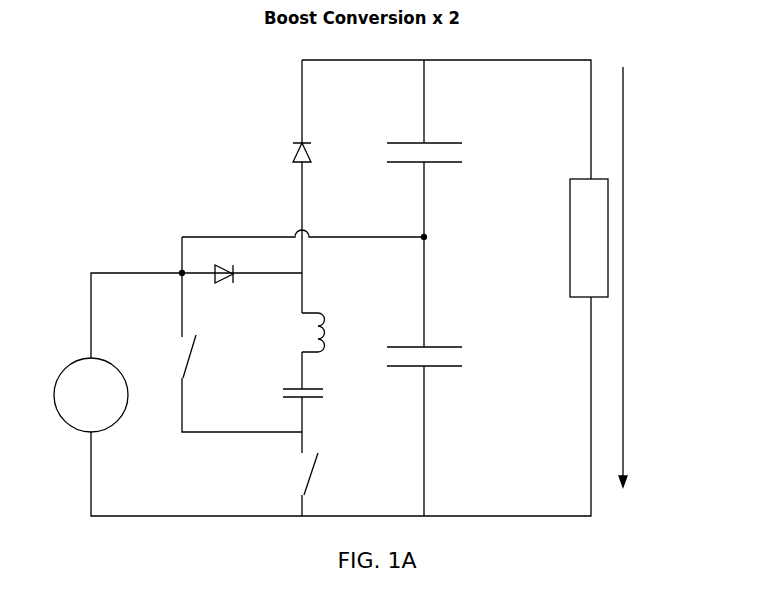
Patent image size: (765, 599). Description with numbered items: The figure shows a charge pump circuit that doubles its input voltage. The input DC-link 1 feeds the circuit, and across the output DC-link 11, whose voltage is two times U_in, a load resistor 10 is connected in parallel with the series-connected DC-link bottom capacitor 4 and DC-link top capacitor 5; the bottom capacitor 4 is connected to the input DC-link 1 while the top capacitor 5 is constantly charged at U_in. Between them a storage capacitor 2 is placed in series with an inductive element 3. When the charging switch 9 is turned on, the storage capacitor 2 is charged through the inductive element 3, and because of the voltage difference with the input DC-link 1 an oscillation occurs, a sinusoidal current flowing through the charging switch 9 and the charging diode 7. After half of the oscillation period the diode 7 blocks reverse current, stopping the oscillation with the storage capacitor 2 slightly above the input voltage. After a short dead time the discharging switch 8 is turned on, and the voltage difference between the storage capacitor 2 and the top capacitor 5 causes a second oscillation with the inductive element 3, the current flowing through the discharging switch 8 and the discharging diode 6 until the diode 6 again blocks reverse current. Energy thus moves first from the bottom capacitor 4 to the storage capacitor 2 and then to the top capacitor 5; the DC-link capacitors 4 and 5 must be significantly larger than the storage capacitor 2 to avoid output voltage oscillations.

The input DC-link 1 is at (79, 395).
The storage capacitor 2 is at (296, 396).
The inductive element 3 is at (307, 332).
The DC-link bottom capacitor 4 is at (437, 353).
The DC-link top capacitor 5 is at (434, 146).
The diode discharging the storage capacitor 6 is at (293, 153).
The diode charging the storage capacitor 7 is at (224, 261).
The switch discharging the storage capacitor 8 is at (194, 357).
The switch charging the storage capacitor 9 is at (322, 474).
The load resistor 10 is at (574, 238).
The output DC-link voltage 11 is at (644, 277).